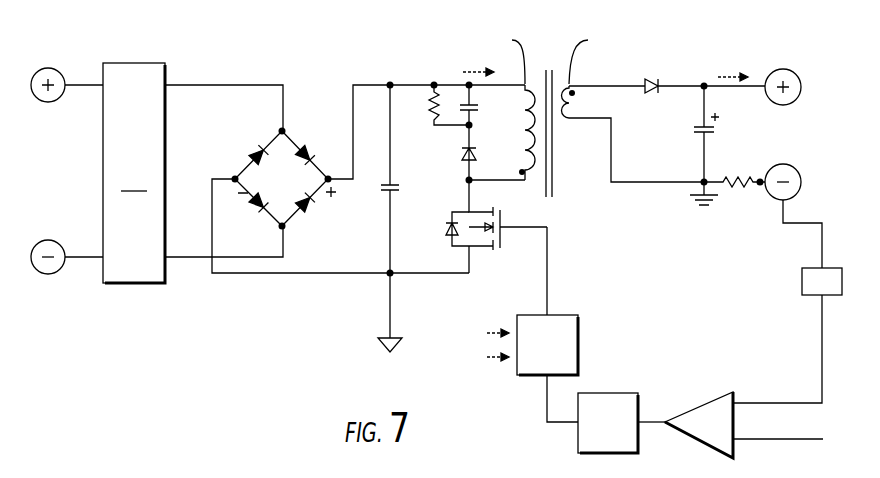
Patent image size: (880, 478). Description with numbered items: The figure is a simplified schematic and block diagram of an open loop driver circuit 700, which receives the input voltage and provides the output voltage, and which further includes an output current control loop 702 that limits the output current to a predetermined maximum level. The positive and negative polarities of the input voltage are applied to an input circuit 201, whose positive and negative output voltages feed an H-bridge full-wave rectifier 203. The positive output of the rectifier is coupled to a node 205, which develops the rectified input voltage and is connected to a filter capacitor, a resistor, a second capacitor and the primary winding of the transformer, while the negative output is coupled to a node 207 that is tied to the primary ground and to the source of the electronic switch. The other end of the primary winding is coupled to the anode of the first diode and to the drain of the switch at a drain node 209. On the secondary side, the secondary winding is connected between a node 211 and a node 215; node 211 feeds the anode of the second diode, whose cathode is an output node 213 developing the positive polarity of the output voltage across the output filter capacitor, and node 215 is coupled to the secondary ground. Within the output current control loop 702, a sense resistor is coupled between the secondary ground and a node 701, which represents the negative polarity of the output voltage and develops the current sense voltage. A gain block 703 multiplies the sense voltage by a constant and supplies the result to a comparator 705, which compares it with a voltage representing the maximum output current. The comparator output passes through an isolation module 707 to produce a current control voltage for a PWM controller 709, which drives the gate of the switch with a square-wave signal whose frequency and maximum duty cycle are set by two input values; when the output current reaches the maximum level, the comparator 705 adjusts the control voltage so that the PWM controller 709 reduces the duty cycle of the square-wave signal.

The input circuit 201 is at (128, 63).
The H-bridge full-wave rectifier 203 is at (295, 191).
The node 205 is at (391, 83).
The node 207 is at (391, 277).
The switch drain node 209 is at (466, 178).
The node 211 is at (590, 84).
The output node 213 is at (704, 84).
The node 215 is at (702, 179).
The open loop driver circuit 700 is at (281, 370).
The node 701 is at (758, 186).
The output current control loop 702 is at (731, 326).
The gain block 703 is at (801, 281).
The comparator 705 is at (720, 431).
The isolation module 707 is at (605, 392).
The PWM controller 709 is at (578, 344).